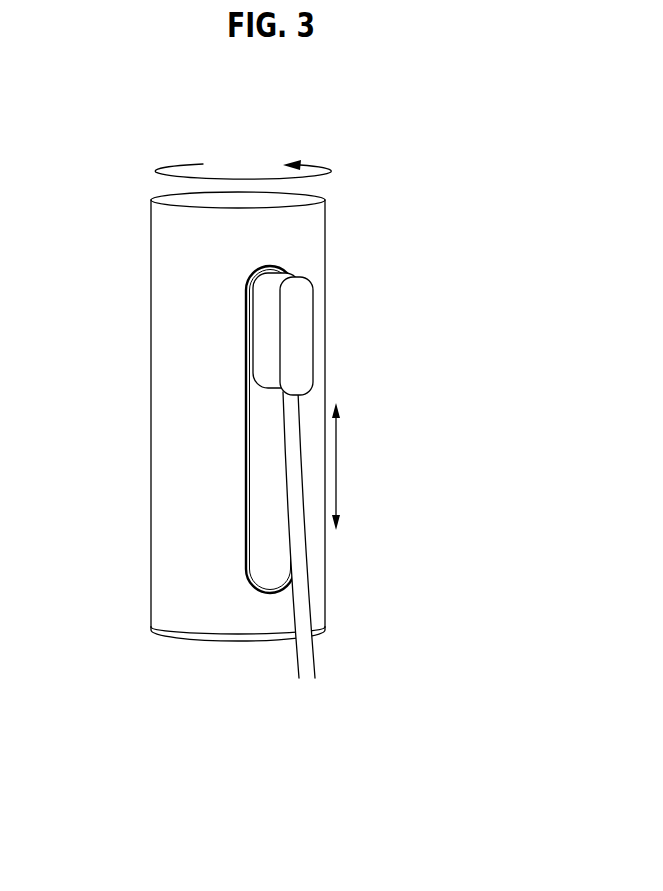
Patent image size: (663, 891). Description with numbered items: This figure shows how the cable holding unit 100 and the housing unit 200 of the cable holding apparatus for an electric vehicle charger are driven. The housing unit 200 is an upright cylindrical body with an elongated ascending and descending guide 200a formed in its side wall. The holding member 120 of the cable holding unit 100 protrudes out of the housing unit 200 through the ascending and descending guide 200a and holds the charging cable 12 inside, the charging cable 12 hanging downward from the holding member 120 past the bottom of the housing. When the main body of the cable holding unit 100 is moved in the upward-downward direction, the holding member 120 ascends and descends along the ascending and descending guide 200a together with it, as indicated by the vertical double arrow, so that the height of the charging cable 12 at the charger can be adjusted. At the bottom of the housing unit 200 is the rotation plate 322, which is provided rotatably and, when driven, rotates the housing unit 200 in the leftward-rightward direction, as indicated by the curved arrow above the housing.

The housing unit 200 is at (239, 463).
The ascending and descending guide 200a is at (249, 476).
The holding member 120 is at (303, 323).
The cable holding unit 100 is at (364, 334).
The charging cable 12 is at (303, 607).
The rotation plate 322 is at (218, 637).